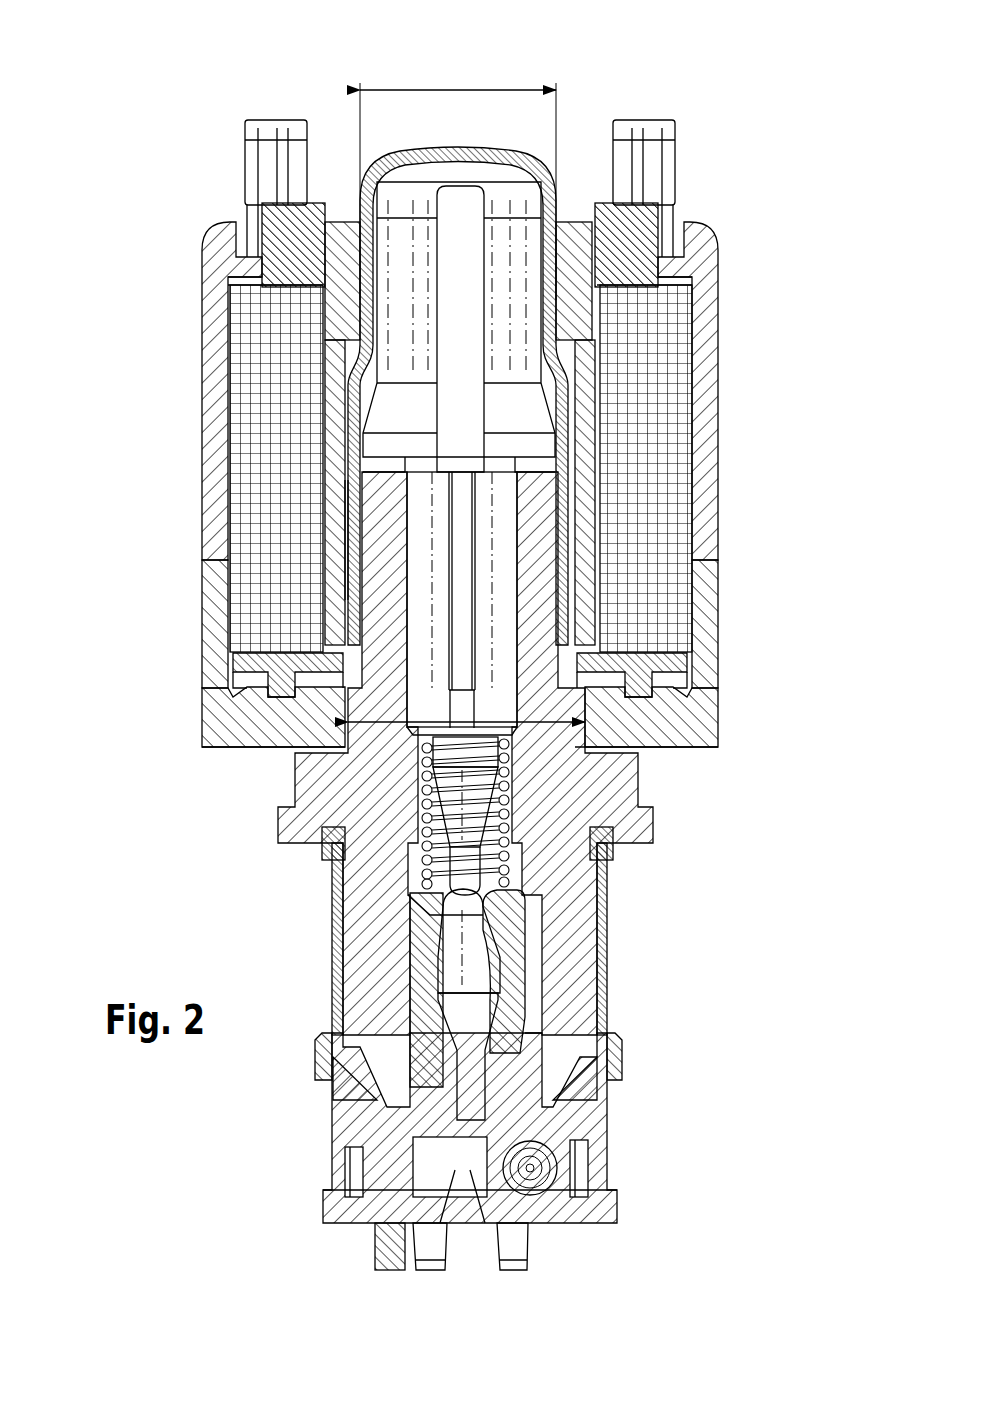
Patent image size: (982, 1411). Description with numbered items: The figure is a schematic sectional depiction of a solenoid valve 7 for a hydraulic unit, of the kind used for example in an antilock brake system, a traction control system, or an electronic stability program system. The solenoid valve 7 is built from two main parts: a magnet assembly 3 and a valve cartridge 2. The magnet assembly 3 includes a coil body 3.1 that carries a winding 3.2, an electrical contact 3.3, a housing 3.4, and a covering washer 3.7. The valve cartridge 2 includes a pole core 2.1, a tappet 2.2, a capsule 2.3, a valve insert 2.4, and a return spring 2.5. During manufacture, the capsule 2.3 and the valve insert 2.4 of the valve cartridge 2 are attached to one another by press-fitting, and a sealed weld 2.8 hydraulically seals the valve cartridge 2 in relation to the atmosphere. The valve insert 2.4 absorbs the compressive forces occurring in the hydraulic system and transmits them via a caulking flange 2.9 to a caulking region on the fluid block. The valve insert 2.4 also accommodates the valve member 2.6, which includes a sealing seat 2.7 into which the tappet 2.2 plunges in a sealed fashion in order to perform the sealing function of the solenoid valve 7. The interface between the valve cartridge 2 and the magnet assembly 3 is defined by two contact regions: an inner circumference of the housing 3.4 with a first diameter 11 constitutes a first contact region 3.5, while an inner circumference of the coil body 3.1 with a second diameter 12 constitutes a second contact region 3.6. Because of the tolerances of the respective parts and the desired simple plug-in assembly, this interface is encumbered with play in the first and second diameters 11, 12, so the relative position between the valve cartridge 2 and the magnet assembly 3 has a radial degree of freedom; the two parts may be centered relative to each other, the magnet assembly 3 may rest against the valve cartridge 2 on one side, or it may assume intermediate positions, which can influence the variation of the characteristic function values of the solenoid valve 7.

The solenoid valve 7 is at (158, 158).
The magnet assembly 3 is at (722, 158).
The valve cartridge 2 is at (711, 855).
The first diameter 11 is at (458, 90).
The second diameter 12 is at (358, 763).
The pole core 2.1 is at (398, 293).
The tappet 2.2 is at (495, 548).
The capsule 2.3 is at (416, 162).
The valve insert 2.4 is at (642, 823).
The return spring 2.5 is at (505, 870).
The valve member 2.6 is at (505, 912).
The sealing seat 2.7 is at (433, 907).
The sealed weld 2.8 is at (355, 553).
The caulking flange 2.9 is at (305, 822).
The coil body 3.1 is at (587, 453).
The winding 3.2 is at (667, 408).
The electrical contact 3.3 is at (263, 127).
The housing 3.4 is at (703, 297).
The first contact region 3.5 is at (373, 257).
The second contact region 3.6 is at (597, 723).
The covering washer 3.7 is at (250, 733).